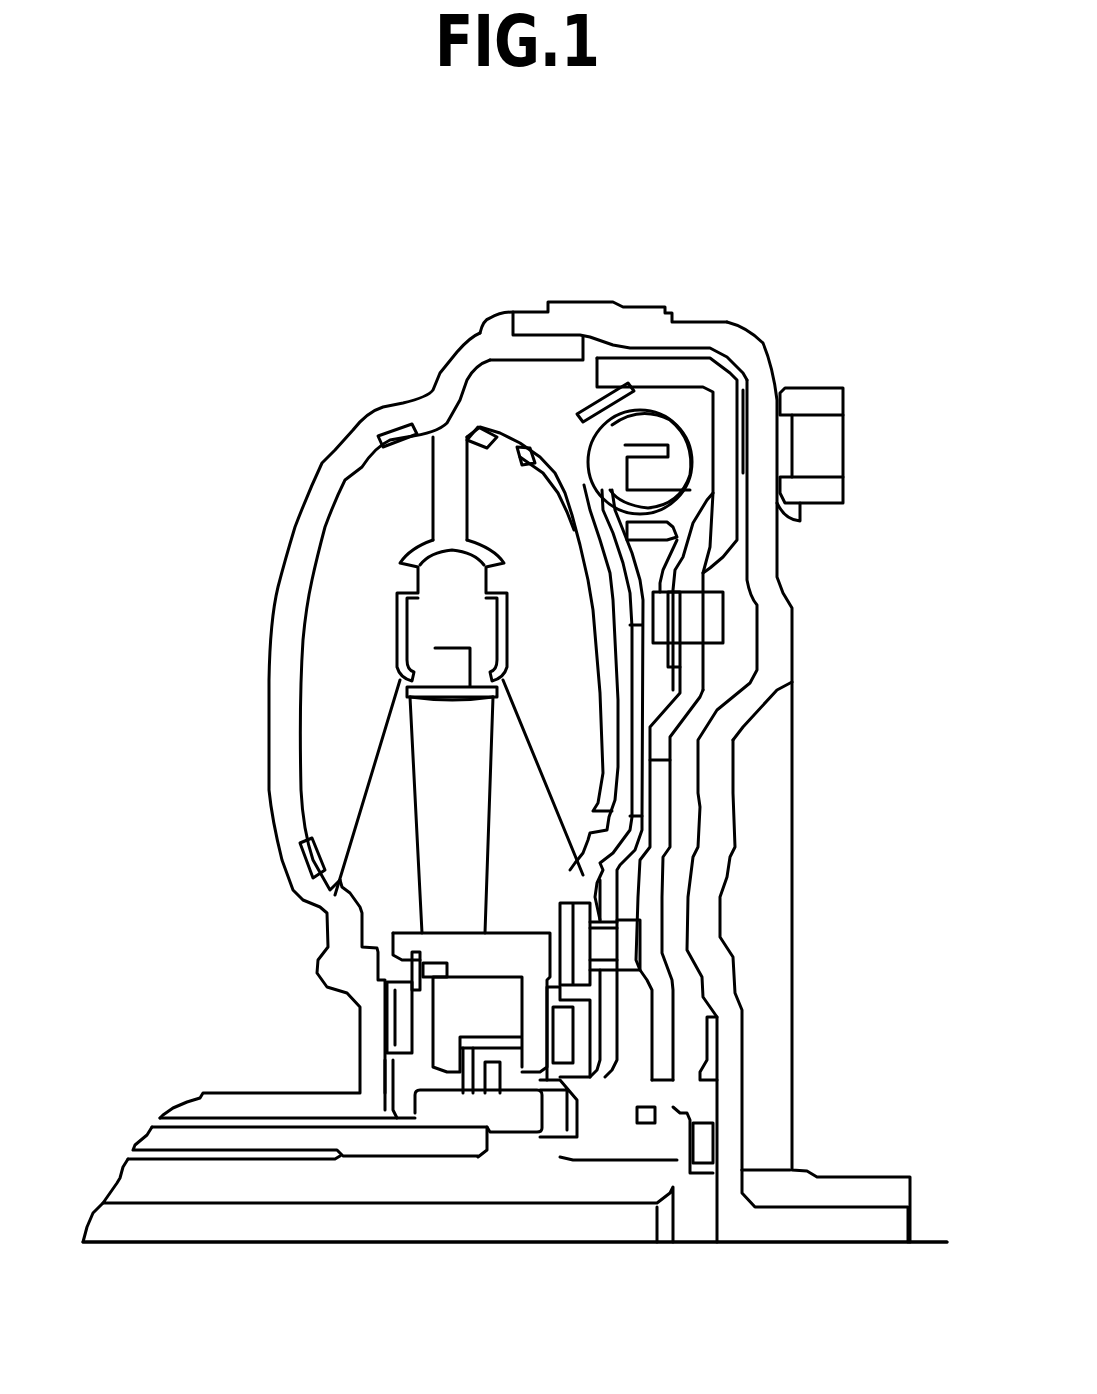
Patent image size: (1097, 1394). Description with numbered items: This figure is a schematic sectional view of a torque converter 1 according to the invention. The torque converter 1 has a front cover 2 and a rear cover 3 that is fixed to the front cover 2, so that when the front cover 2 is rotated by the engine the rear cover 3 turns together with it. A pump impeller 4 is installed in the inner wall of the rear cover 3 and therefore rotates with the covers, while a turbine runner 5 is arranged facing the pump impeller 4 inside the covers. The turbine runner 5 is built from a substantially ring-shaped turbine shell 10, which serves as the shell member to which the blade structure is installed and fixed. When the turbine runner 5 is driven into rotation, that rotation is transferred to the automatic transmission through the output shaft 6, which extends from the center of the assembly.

The torque converter 1 is at (830, 288).
The front cover 2 is at (535, 320).
The rear cover 3 is at (459, 366).
The pump impeller 4 is at (328, 578).
The turbine runner 5 is at (555, 592).
The output shaft 6 is at (128, 1180).
The turbine shell 10 is at (600, 693).